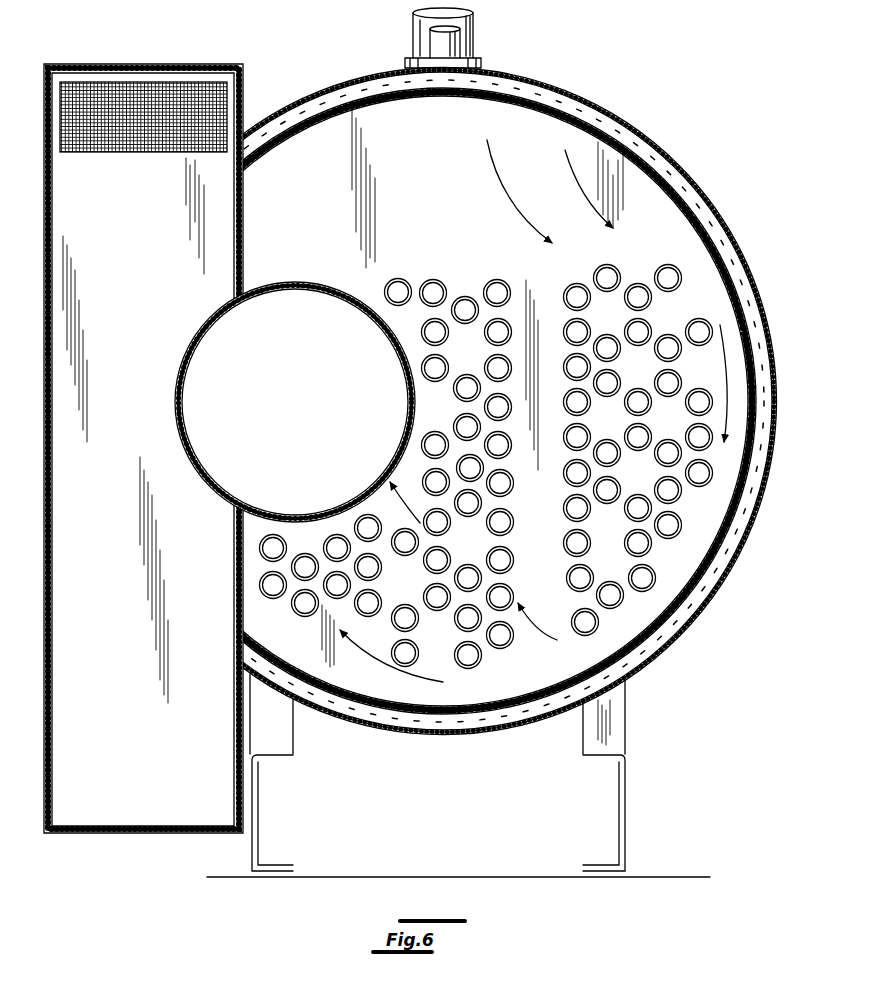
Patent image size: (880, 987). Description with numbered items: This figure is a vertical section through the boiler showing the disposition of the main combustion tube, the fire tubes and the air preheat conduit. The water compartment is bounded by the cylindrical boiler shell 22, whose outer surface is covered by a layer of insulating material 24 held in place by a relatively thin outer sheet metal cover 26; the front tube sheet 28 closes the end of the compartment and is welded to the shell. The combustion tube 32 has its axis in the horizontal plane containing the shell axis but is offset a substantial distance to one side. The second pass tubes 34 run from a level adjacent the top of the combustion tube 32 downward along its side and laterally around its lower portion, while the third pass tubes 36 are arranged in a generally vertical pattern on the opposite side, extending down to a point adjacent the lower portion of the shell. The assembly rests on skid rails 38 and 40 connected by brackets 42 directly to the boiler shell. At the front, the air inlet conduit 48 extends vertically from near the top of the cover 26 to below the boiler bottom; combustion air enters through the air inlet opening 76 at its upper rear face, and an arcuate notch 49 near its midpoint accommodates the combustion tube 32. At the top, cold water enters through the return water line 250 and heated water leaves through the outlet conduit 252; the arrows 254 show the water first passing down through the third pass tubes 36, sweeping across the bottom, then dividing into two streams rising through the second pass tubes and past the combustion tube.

The boiler shell 22 is at (393, 92).
The layer of insulating material 24 is at (507, 86).
The outer sheet metal cover 26 is at (575, 96).
The front tube sheet 28 is at (457, 188).
The combustion tube 32 is at (289, 284).
The second pass tubes 34 is at (494, 278).
The third pass tubes 36 is at (668, 268).
The skid rail 38 is at (257, 802).
The skid rail 40 is at (628, 818).
The brackets 42 is at (280, 727).
The air inlet conduit 48 is at (246, 238).
The arcuate notch 49 is at (183, 450).
The air inlet opening 76 is at (205, 94).
The return water line 250 is at (416, 28).
The outlet conduit 252 is at (440, 40).
The arrows 254 is at (580, 180).